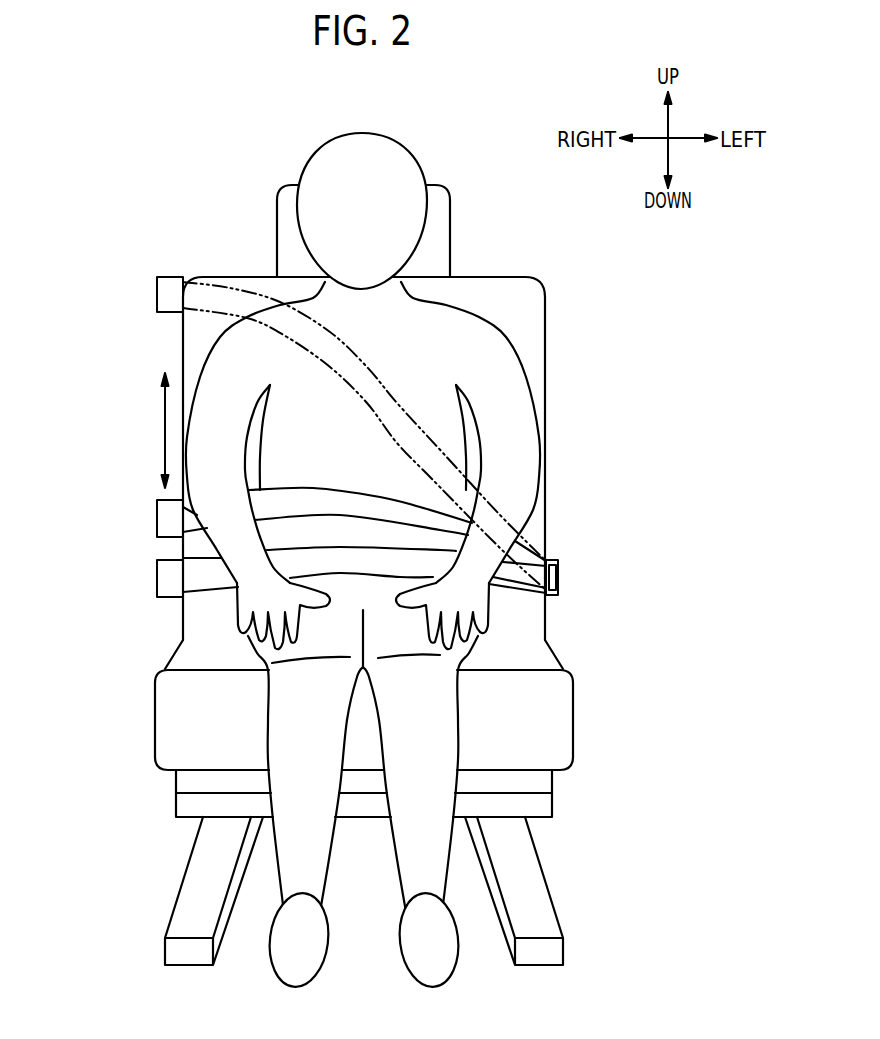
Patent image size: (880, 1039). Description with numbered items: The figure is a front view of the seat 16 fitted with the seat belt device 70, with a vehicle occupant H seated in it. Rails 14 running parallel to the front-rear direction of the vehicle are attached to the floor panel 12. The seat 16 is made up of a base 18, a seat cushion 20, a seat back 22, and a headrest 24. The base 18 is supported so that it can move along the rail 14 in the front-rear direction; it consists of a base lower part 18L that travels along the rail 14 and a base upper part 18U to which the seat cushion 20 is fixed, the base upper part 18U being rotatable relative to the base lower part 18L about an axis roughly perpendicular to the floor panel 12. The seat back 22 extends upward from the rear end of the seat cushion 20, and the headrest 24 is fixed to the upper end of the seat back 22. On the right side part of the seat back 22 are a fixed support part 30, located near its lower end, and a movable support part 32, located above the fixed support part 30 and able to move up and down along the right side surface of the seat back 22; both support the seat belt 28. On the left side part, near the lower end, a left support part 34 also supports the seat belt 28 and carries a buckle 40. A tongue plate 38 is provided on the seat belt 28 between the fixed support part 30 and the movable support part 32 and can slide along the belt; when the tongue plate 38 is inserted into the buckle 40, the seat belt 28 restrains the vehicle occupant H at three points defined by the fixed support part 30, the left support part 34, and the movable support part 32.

The floor panel 12 is at (332, 555).
The rail 14 is at (172, 902).
The seat 16 is at (383, 407).
The base 18 is at (289, 798).
The base upper part 18U is at (177, 785).
The base lower part 18L is at (177, 807).
The seat cushion 20 is at (155, 703).
The seat back 22 is at (193, 280).
The headrest 24 is at (440, 182).
The seat belt 28 is at (525, 547).
The fixed support part 30 is at (157, 577).
The movable support part 32 is at (157, 517).
The left support part 34 is at (604, 590).
The tongue plate 38 is at (557, 593).
The buckle 40 is at (552, 577).
The seat belt device 70 is at (125, 485).
The vehicle occupant H is at (330, 138).